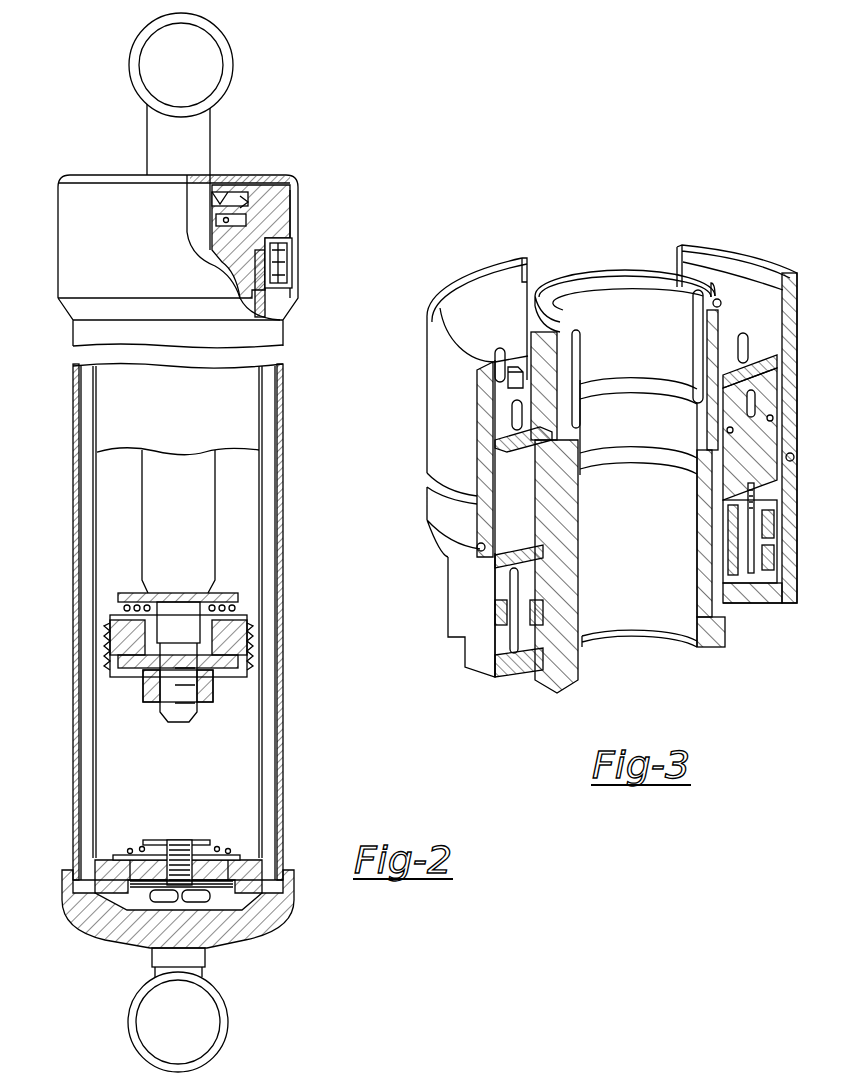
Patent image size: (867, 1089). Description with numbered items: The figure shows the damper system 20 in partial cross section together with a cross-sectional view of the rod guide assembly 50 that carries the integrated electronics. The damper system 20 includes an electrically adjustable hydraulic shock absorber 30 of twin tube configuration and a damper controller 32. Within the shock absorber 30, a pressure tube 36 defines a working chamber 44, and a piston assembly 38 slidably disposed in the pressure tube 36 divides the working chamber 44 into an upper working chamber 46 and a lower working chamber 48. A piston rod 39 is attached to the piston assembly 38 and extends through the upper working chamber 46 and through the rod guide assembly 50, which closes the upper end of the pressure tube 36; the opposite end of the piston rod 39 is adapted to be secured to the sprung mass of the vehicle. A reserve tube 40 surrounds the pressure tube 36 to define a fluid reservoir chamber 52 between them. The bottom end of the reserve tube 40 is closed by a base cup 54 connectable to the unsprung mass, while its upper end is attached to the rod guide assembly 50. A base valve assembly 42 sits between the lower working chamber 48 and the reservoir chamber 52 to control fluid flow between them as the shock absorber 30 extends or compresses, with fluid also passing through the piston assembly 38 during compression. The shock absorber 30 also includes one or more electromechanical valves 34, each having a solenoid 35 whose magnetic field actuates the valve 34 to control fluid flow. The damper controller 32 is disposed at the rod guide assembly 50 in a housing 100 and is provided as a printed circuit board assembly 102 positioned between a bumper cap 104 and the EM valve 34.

In FIG. 2, the damper system 20 is at (338, 66).
In FIG. 2, the electrically adjustable hydraulic shock absorber 30 is at (258, 158).
In FIG. 2, the bumper cap 104 is at (92, 180).
In FIG. 2, the rod guide assembly 50 is at (278, 205).
In FIG. 3, the rod guide assembly 50 is at (492, 214).
In FIG. 2, the electromechanical valve 34 is at (299, 252).
In FIG. 3, the electromechanical valve 34 is at (781, 518).
In FIG. 2, the upper working chamber 46 is at (235, 537).
In FIG. 2, the fluid reservoir chamber 52 is at (85, 415).
In FIG. 2, the reserve tube 40 is at (285, 740).
In FIG. 2, the pressure tube 36 is at (263, 472).
In FIG. 2, the piston rod 39 is at (172, 516).
In FIG. 2, the working chamber 44 is at (172, 787).
In FIG. 2, the lower working chamber 48 is at (123, 742).
In FIG. 2, the piston assembly 38 is at (235, 632).
In FIG. 2, the base valve assembly 42 is at (255, 873).
In FIG. 2, the base cup 54 is at (92, 922).
In FIG. 3, the housing 100 is at (438, 407).
In FIG. 3, the damper controller 32 is at (488, 447).
In FIG. 3, the printed circuit board assembly 102 is at (762, 355).
In FIG. 3, the solenoid 35 is at (752, 460).